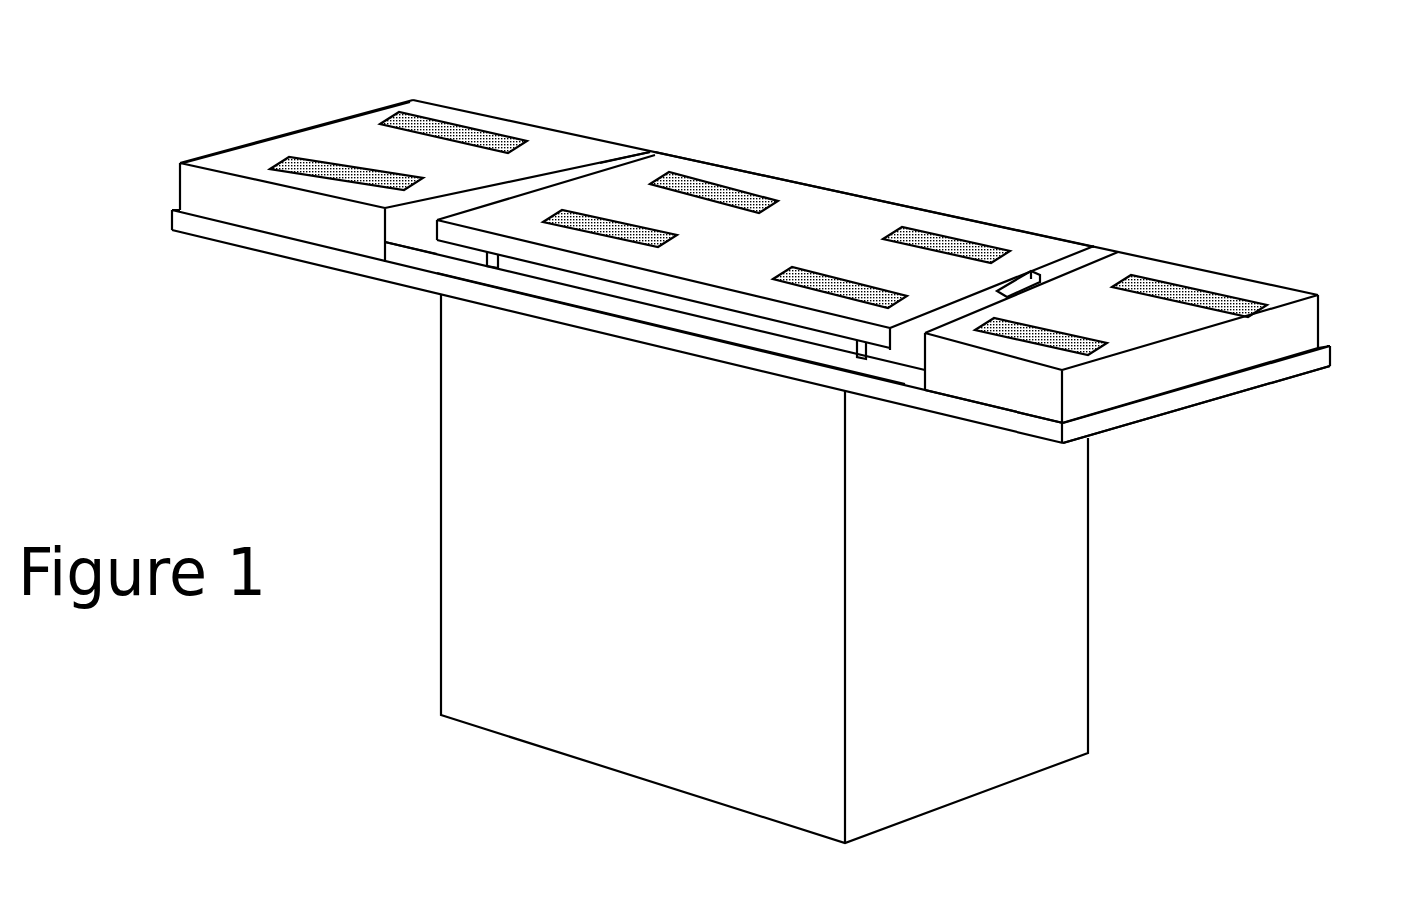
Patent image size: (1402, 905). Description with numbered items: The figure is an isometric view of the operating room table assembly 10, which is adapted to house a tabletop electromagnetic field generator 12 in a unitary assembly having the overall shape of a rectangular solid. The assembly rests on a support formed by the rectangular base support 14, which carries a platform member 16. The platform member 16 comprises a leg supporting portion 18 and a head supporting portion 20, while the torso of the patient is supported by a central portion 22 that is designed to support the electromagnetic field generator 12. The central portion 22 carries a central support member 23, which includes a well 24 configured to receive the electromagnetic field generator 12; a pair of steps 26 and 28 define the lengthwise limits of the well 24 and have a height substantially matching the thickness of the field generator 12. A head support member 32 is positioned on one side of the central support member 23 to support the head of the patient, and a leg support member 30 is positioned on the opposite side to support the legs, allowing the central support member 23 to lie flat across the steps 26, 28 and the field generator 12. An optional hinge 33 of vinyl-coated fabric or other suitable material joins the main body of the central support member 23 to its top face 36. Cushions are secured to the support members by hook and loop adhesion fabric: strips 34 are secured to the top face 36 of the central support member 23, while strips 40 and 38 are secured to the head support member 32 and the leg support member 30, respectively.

The operating room table assembly 10 is at (1220, 140).
The electromagnetic field generator 12 is at (650, 293).
The rectangular base support 14 is at (1068, 572).
The platform member 16 is at (780, 372).
The leg supporting portion 18 is at (238, 240).
The head supporting portion 20 is at (1023, 430).
The central portion 22 is at (707, 350).
The central support member 23 is at (393, 233).
The well 24 is at (547, 270).
The step 26 is at (460, 252).
The step 28 is at (878, 355).
The leg support member 30 is at (440, 113).
The head support member 32 is at (1300, 290).
The hinge 33 is at (650, 160).
The adhesion fabric strips 34 is at (712, 185).
The top face 36 is at (837, 197).
The adhesion fabric strips 38 is at (497, 132).
The adhesion fabric strips 40 is at (1042, 332).